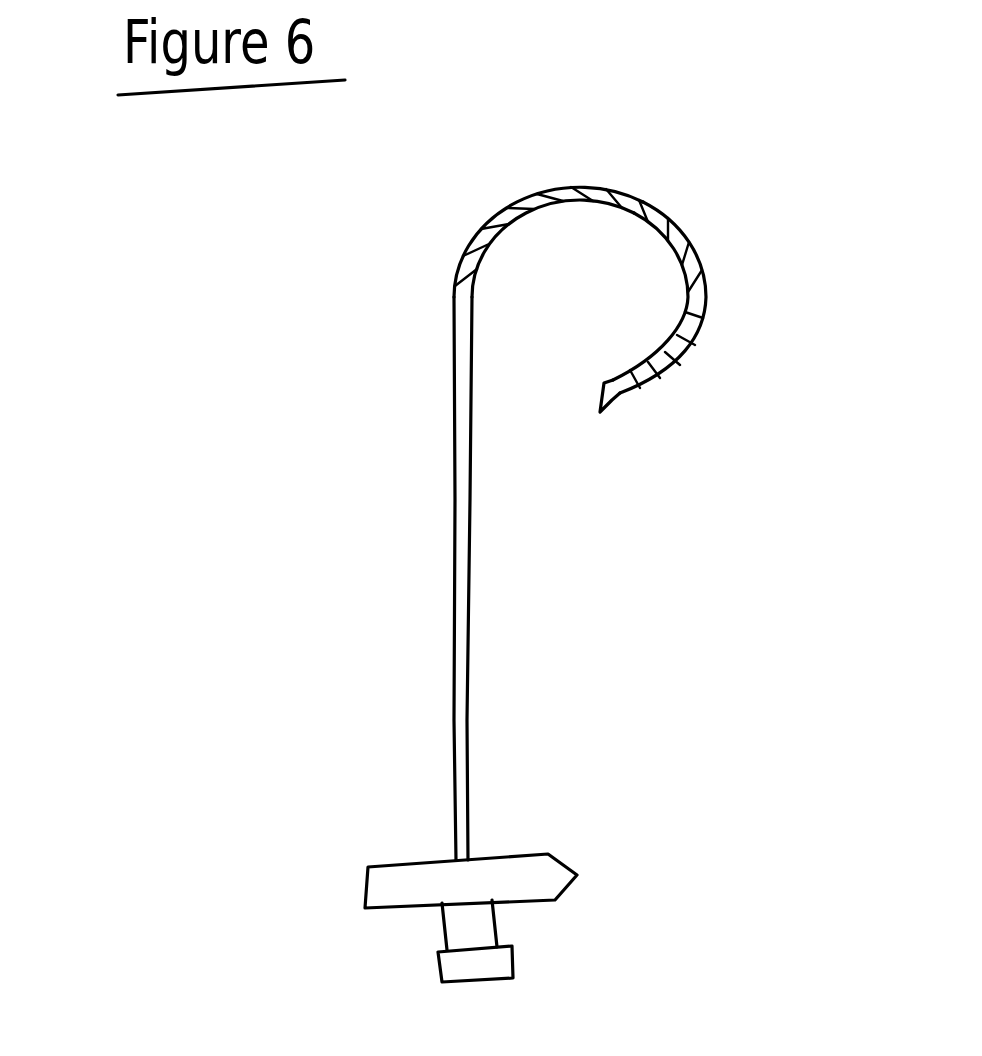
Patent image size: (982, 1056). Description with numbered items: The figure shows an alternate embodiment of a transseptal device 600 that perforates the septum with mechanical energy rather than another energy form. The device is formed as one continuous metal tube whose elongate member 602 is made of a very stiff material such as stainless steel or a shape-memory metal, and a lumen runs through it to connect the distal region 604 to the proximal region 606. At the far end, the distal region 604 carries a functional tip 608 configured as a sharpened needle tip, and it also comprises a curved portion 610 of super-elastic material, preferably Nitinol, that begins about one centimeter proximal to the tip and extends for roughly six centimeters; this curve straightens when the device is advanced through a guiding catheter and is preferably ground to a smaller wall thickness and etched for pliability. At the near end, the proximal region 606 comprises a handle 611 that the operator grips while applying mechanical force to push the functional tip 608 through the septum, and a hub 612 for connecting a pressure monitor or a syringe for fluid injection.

The transseptal device 600 is at (297, 462).
The elongate member 602 is at (453, 642).
The distal region 604 is at (480, 167).
The proximal region 606 is at (618, 1015).
The functional tip 608 is at (613, 402).
The curved portion 610 is at (698, 423).
The handle 611 is at (370, 885).
The hub 612 is at (438, 962).